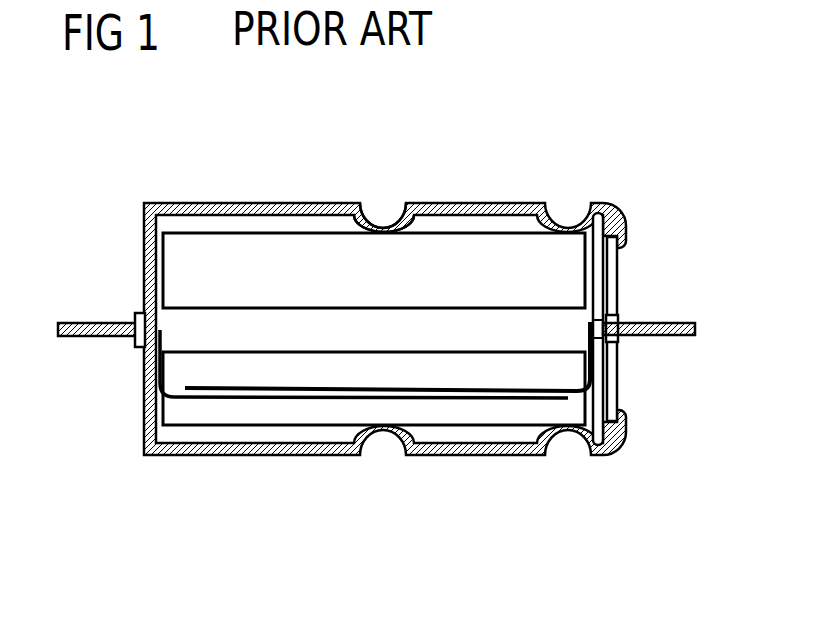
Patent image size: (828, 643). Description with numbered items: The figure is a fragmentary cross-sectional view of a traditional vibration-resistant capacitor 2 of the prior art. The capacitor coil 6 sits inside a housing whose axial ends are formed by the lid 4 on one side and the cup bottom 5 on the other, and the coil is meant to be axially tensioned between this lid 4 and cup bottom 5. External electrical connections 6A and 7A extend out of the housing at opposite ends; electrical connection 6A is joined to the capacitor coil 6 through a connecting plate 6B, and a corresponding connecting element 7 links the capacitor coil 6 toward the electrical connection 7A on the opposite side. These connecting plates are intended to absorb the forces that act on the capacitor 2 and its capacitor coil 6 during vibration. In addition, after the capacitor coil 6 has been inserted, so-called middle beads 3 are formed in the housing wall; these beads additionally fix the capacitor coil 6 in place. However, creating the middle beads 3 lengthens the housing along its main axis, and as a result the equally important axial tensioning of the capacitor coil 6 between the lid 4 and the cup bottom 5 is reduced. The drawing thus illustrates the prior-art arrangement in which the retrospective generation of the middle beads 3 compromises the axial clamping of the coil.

The vibration-resistant capacitor 2 is at (200, 172).
The middle beads 3 is at (383, 203).
The lid 4 is at (612, 270).
The cup bottom 5 is at (144, 255).
The capacitor coil 6 is at (444, 250).
The electrical connection 6A is at (103, 337).
The connecting plate 6B is at (518, 400).
The second winding contact 7 is at (581, 383).
The electrical connection 7A is at (676, 337).